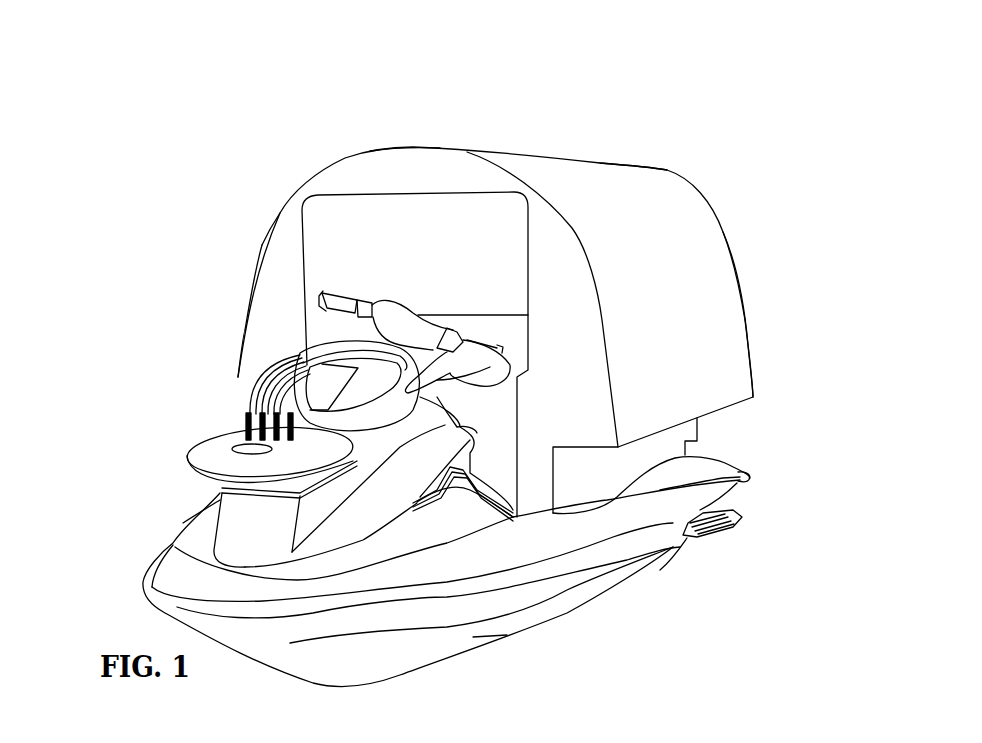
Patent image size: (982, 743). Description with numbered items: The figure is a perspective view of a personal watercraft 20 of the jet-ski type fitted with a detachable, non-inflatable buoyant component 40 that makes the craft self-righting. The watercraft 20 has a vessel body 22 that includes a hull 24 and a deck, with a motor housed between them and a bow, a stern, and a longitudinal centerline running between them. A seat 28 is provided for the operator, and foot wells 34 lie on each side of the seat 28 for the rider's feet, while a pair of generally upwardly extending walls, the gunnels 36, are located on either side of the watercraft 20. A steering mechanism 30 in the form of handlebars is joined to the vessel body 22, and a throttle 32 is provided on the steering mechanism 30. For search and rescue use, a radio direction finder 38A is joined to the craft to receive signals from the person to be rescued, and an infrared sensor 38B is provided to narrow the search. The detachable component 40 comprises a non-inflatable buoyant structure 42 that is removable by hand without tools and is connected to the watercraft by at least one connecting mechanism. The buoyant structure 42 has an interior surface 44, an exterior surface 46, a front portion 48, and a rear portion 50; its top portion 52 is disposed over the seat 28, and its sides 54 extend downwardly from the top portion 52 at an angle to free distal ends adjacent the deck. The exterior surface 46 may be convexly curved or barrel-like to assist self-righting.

The watercraft 20 is at (143, 526).
The vessel body 22 is at (483, 648).
The hull 24 is at (400, 637).
The seat 28 is at (489, 313).
The steering mechanism 30 is at (377, 302).
The throttle 32 is at (331, 292).
The foot wells 34 is at (505, 499).
The gunnels 36 is at (615, 490).
The radio direction finder 38A is at (207, 463).
The infrared sensor 38B is at (139, 266).
The detachable component 40 is at (571, 190).
The buoyant structure 42 is at (613, 250).
The interior surface 44 is at (440, 218).
The exterior surface 46 is at (657, 190).
The front portion 48 is at (283, 250).
The rear portion 50 is at (717, 222).
The top portion 52 is at (408, 147).
The sides 54 is at (253, 283).